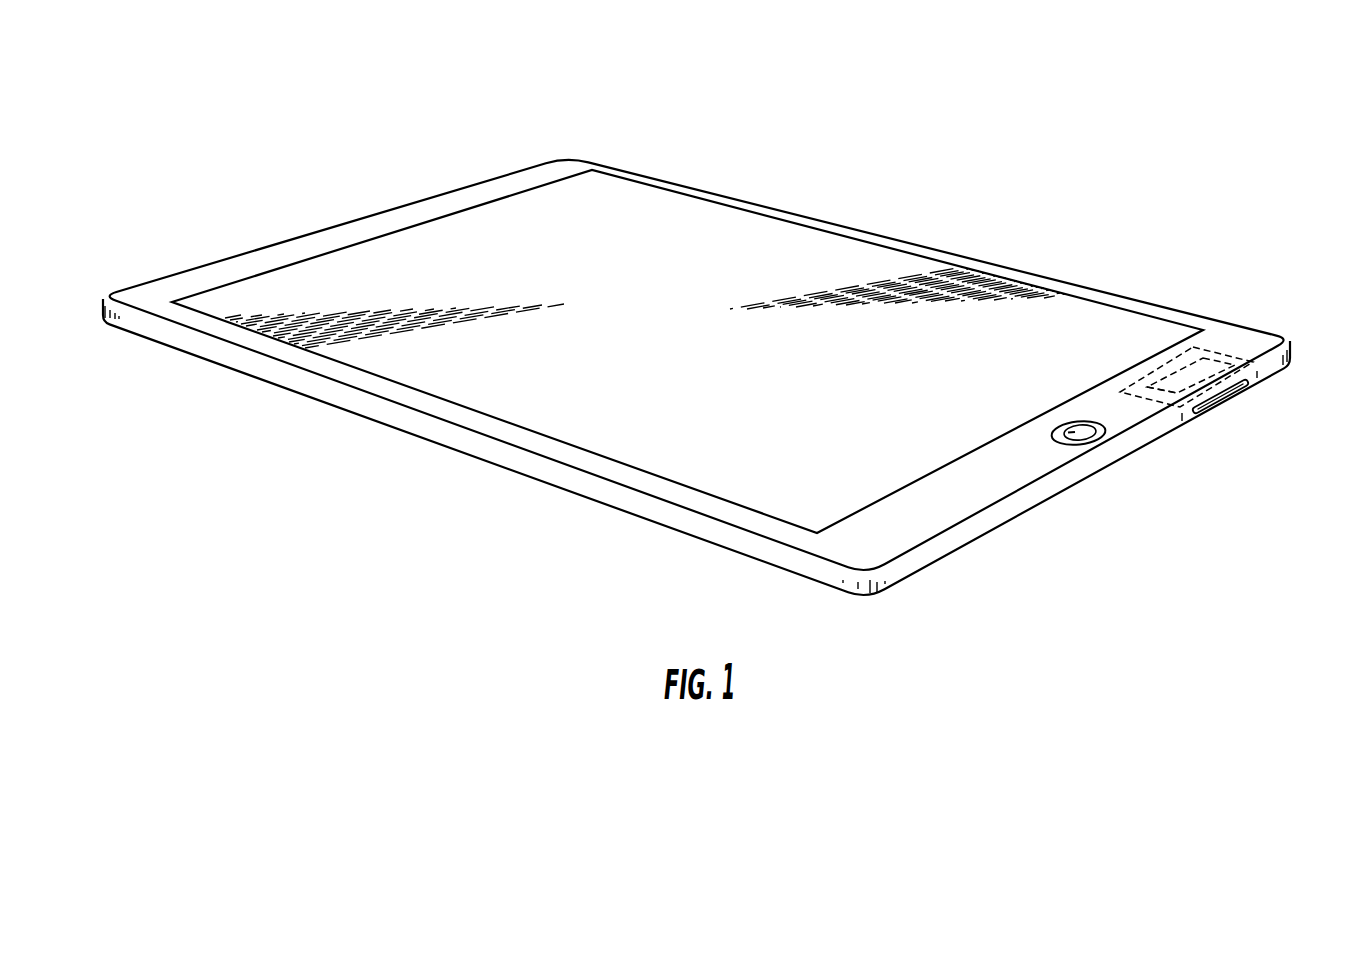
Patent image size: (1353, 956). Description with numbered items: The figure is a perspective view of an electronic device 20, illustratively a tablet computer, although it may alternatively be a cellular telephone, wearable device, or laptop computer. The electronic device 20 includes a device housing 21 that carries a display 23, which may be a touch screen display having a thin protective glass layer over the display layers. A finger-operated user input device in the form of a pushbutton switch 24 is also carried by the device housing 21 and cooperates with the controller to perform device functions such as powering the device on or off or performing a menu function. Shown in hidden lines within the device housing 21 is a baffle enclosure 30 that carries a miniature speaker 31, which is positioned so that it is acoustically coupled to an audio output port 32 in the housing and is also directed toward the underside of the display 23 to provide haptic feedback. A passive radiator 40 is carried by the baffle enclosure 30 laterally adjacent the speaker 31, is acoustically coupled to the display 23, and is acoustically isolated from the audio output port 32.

The electronic device 20 is at (303, 110).
The device housing 21 is at (208, 349).
The display 23 is at (733, 243).
The pushbutton switch 24 is at (1070, 433).
The baffle enclosure 30 is at (1215, 351).
The speaker 31 is at (1220, 377).
The passive radiator 40 is at (1165, 389).
The audio output port 32 is at (1216, 399).